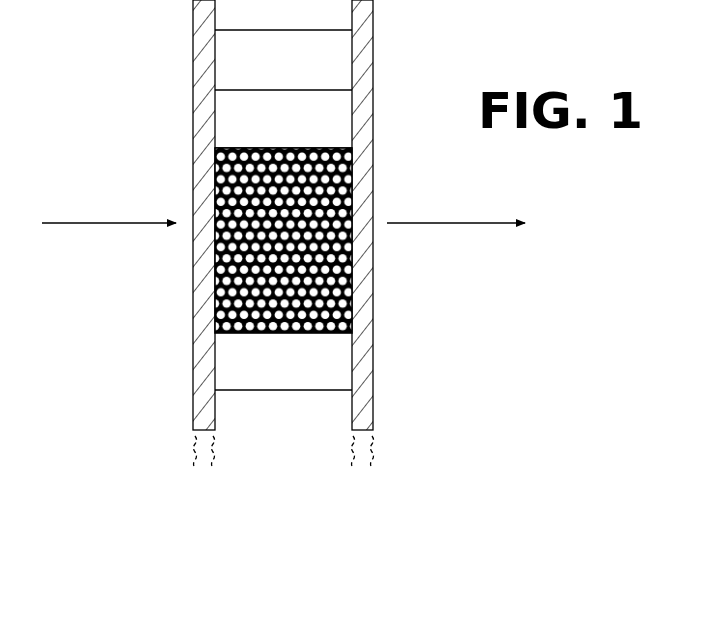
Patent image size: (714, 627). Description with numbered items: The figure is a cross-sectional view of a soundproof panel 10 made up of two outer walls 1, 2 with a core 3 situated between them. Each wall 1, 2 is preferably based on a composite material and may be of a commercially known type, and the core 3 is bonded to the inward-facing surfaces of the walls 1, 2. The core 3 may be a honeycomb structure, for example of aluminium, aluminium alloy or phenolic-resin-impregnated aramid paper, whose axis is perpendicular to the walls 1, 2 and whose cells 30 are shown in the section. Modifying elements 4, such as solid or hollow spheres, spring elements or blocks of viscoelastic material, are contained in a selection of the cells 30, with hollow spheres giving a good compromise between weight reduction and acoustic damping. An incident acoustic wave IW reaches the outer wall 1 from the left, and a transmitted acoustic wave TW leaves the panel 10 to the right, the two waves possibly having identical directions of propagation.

The outer wall 1 is at (193, 58).
The outer wall 2 is at (373, 58).
The core 3 is at (356, 474).
The modifying elements 4 is at (336, 240).
The soundproof panel 10 is at (414, 352).
The cells 30 is at (337, 72).